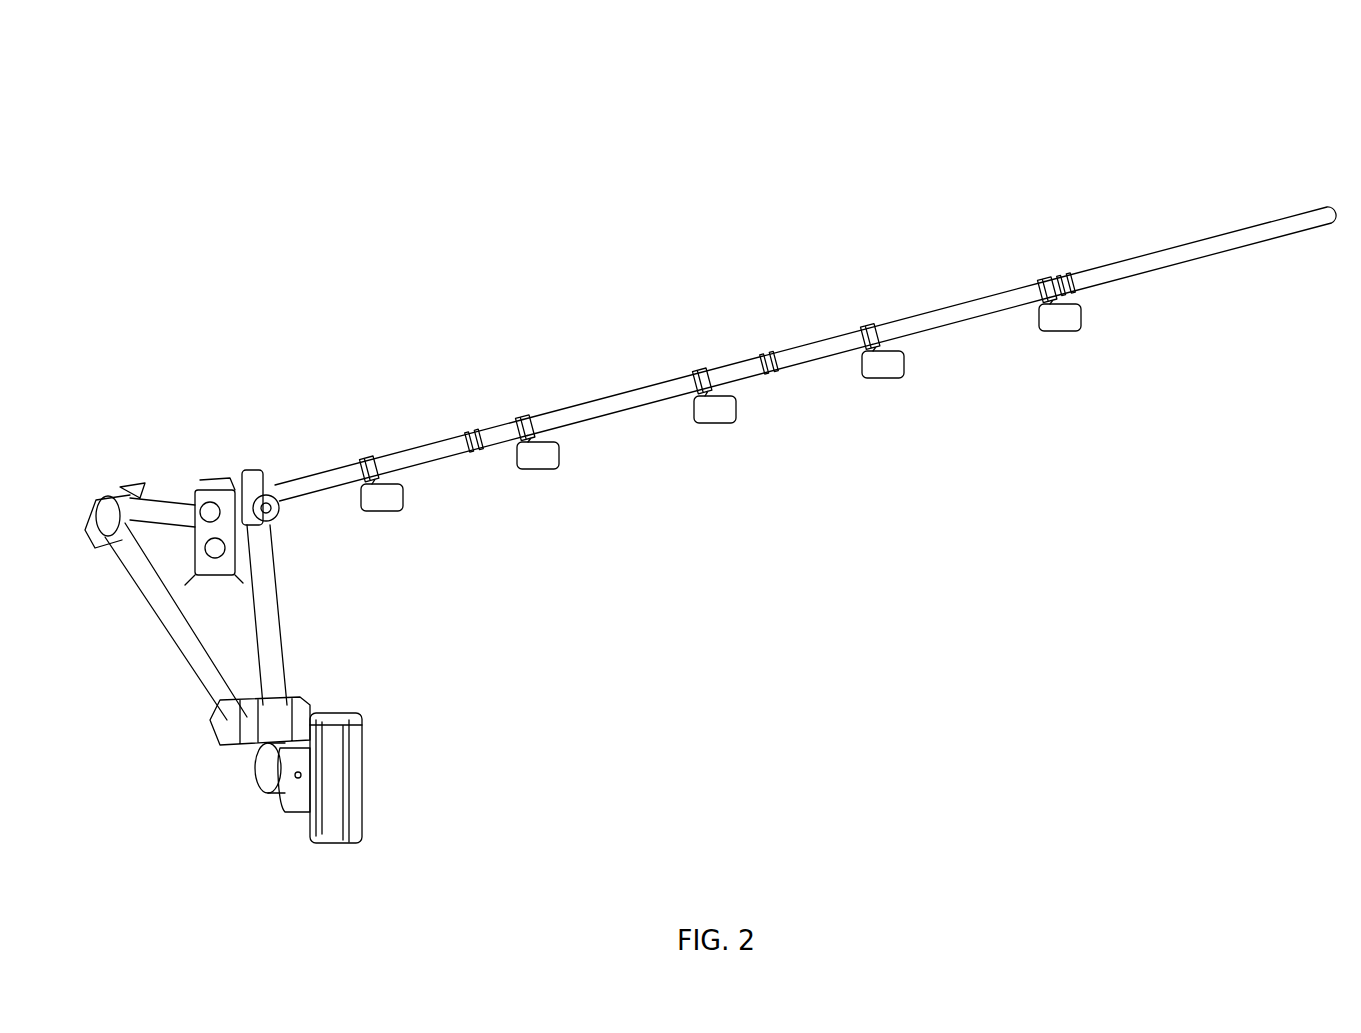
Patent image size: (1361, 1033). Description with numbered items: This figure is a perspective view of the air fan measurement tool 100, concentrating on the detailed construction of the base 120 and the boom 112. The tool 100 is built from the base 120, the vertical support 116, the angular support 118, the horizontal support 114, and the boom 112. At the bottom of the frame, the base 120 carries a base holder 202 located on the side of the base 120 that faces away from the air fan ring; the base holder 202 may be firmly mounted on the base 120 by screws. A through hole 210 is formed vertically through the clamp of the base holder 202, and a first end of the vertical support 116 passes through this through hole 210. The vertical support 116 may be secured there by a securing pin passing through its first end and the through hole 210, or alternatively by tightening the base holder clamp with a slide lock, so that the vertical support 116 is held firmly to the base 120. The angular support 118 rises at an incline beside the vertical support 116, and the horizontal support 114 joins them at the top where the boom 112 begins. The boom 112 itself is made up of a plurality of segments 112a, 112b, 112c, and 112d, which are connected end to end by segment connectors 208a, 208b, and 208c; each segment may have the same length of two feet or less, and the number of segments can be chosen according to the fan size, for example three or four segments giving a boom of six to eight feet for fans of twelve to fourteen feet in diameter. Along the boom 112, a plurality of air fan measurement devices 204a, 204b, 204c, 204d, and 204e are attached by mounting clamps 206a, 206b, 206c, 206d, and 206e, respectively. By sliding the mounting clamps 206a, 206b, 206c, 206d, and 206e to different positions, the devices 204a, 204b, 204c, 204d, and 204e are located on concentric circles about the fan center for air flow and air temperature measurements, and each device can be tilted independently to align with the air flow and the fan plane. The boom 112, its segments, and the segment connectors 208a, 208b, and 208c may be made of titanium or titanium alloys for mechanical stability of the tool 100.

The air fan measurement tool 100 is at (172, 170).
The boom 112 is at (1208, 40).
The segment 112a is at (306, 483).
The segment 112b is at (604, 405).
The segment 112c is at (929, 318).
The segment 112d is at (1158, 260).
The horizontal support 114 is at (165, 525).
The vertical support 116 is at (263, 628).
The angular support 118 is at (187, 635).
The base 120 is at (355, 801).
The base holder 202 is at (300, 778).
The air fan measurement device 204a is at (409, 516).
The air fan measurement device 204b is at (555, 476).
The air fan measurement device 204c is at (738, 428).
The air fan measurement device 204d is at (912, 385).
The air fan measurement device 204e is at (1083, 339).
The mounting clamp 206a is at (368, 455).
The mounting clamp 206b is at (523, 415).
The mounting clamp 206c is at (700, 378).
The mounting clamp 206d is at (868, 328).
The mounting clamp 206e is at (1045, 280).
The segment connector 208a is at (473, 432).
The segment connector 208b is at (766, 353).
The segment connector 208c is at (1062, 284).
The through hole 210 is at (277, 760).